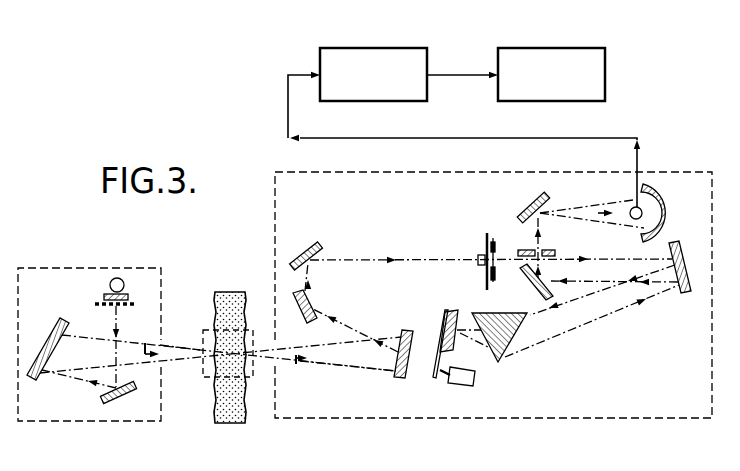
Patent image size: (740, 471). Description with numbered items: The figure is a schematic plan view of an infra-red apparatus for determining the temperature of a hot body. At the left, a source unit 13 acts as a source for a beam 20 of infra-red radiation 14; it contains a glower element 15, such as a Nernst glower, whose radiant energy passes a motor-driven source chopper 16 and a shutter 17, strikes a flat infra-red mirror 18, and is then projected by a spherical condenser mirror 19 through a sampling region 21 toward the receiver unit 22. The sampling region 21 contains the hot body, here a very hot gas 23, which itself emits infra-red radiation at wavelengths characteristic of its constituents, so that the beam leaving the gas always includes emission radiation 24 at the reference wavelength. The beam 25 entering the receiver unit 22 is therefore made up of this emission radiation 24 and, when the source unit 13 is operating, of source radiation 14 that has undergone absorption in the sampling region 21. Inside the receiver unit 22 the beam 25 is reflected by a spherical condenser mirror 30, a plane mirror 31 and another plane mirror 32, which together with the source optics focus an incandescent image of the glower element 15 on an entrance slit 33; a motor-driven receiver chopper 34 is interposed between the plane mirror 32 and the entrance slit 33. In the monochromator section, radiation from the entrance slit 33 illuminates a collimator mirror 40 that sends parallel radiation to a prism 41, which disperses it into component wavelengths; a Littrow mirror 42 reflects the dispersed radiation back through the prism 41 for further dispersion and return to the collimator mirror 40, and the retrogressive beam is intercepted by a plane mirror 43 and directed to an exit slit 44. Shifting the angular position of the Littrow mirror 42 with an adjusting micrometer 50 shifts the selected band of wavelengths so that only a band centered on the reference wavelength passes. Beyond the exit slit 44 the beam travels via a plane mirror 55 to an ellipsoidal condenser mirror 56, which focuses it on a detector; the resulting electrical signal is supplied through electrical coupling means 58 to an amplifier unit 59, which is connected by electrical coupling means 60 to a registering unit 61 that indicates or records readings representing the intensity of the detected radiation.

The source unit 13 is at (76, 266).
The infra-red radiation 14 is at (145, 344).
The glower element 15 is at (117, 278).
The source chopper 16 is at (105, 294).
The shutter 17 is at (95, 303).
The flat infra-red mirror 18 is at (102, 397).
The spherical condenser mirror 19 is at (52, 332).
The beam of infra-red radiation 20 is at (180, 348).
The sampling region 21 is at (203, 376).
The receiver unit 22 is at (547, 418).
The hot gas 23 is at (229, 292).
The emission radiation 24 is at (297, 365).
The beam entering receiver unit 25 is at (345, 367).
The spherical condenser mirror 30 is at (407, 329).
The plane mirror 31 is at (303, 312).
The plane mirror 32 is at (307, 245).
The entrance slit 33 is at (495, 258).
The receiver chopper 34 is at (485, 243).
The collimator mirror 40 is at (686, 293).
The prism 41 is at (505, 355).
The Littrow mirror 42 is at (449, 310).
The plane mirror 43 is at (530, 289).
The exit slit 44 is at (550, 250).
The adjusting micrometer 50 is at (465, 386).
The plane mirror 55 is at (531, 206).
The ellipsoidal condenser mirror 56 is at (667, 210).
The electrical coupling means 58 is at (465, 138).
The amplifier unit 59 is at (372, 53).
The electrical coupling means 60 is at (463, 73).
The registering unit 61 is at (552, 53).